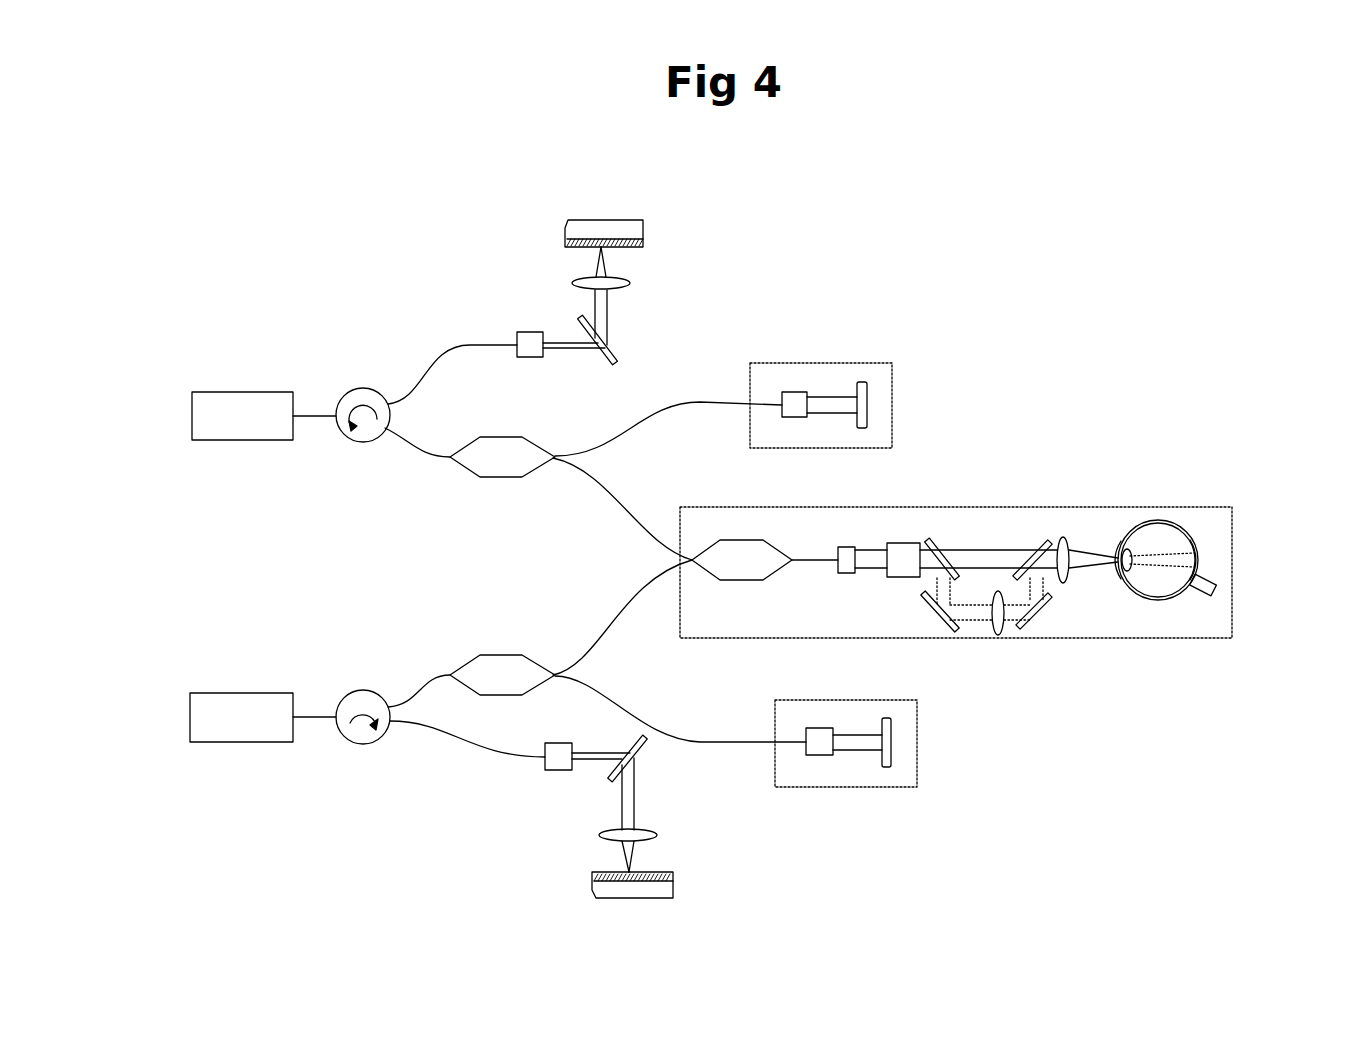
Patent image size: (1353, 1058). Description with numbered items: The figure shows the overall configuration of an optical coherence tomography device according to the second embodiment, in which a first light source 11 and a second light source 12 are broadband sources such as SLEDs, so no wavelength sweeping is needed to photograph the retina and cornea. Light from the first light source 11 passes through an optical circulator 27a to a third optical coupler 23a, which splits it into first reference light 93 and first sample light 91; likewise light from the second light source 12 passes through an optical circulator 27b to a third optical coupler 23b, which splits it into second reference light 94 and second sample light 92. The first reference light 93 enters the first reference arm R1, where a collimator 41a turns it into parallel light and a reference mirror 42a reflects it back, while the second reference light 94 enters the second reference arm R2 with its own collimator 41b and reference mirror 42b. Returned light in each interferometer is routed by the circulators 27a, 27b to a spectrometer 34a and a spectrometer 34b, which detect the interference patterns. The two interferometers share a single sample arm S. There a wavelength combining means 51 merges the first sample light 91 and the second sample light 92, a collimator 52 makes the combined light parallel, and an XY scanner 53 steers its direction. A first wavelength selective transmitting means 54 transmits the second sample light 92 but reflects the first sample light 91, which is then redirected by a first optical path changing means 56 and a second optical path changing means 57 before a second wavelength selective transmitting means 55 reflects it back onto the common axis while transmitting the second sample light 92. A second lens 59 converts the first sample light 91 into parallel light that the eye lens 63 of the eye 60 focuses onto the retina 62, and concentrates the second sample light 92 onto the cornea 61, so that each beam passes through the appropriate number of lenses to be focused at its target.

The first light source 11 is at (240, 392).
The second light source 12 is at (240, 693).
The optical circulator 27a is at (363, 388).
The optical circulator 27b is at (363, 690).
The third optical coupler 23a is at (500, 437).
The third optical coupler 23b is at (500, 655).
The spectrometer 34a is at (628, 261).
The spectrometer 34b is at (675, 862).
The first reference arm R1 is at (892, 407).
The second reference arm R2 is at (917, 743).
The collimator 41a is at (790, 392).
The collimator 41b is at (815, 728).
The first reference light 93 is at (822, 400).
The second reference light 94 is at (847, 738).
The reference mirror 42a is at (860, 382).
The reference mirror 42b is at (885, 718).
The sample arm S is at (1172, 507).
The wavelength combining means 51 is at (742, 540).
The collimator 52 is at (850, 547).
The XY scanner 53 is at (905, 543).
The first wavelength selective transmitting means 54 is at (940, 540).
The second sample light 92 is at (978, 552).
The first sample light 91 is at (940, 585).
The first optical path changing means 56 is at (925, 605).
The second optical path changing means 57 is at (1040, 615).
The second wavelength selective transmitting means 55 is at (1040, 548).
The second lens 59 is at (1063, 538).
The eye 60 is at (1197, 529).
The cornea 61 is at (1122, 548).
The retina 62 is at (1172, 600).
The eye lens 63 is at (1130, 590).